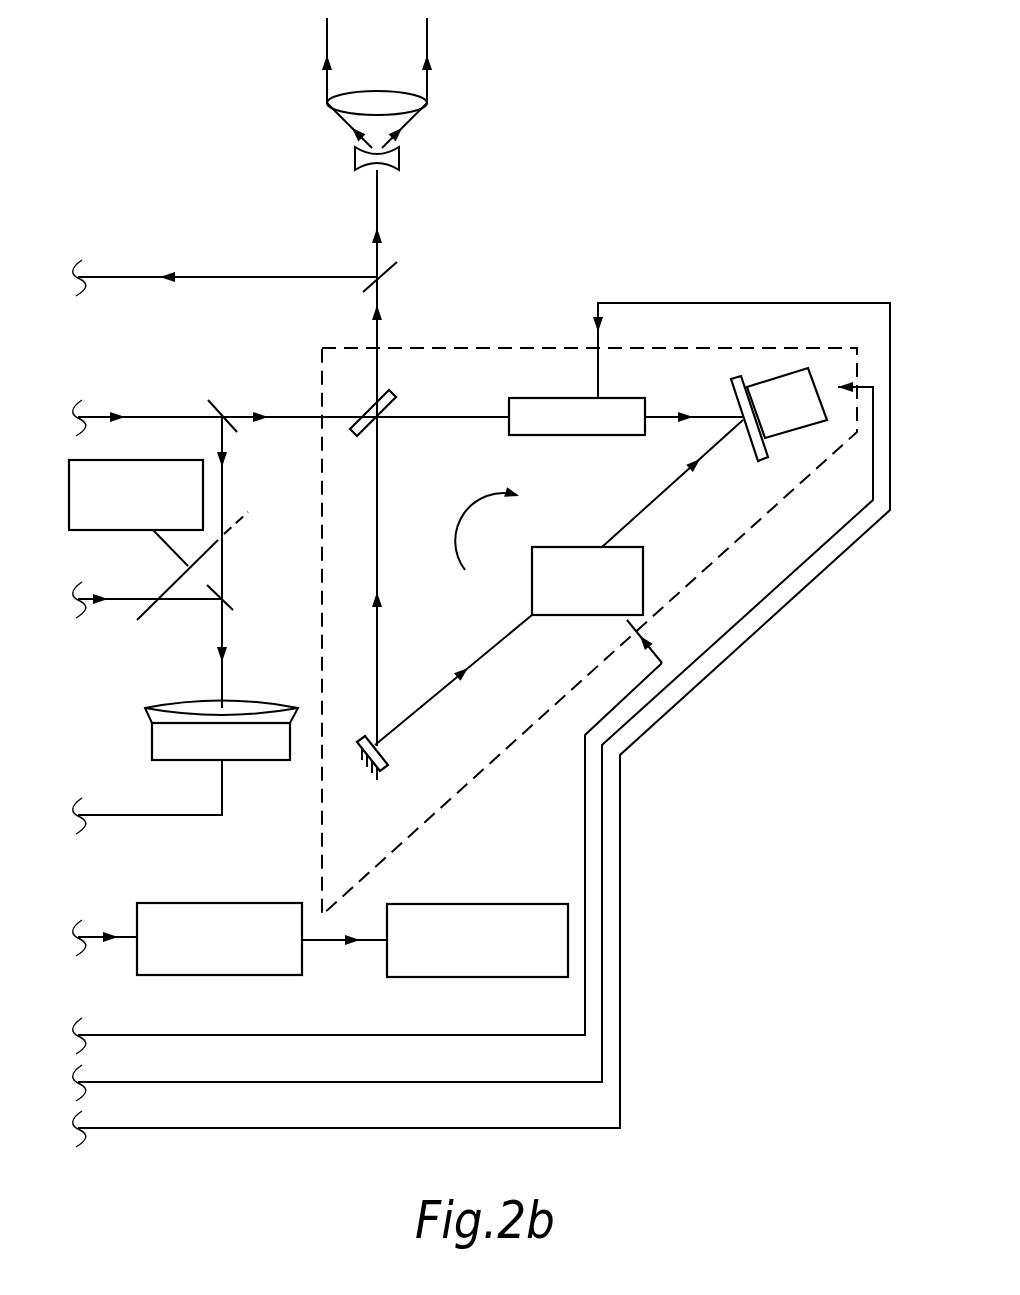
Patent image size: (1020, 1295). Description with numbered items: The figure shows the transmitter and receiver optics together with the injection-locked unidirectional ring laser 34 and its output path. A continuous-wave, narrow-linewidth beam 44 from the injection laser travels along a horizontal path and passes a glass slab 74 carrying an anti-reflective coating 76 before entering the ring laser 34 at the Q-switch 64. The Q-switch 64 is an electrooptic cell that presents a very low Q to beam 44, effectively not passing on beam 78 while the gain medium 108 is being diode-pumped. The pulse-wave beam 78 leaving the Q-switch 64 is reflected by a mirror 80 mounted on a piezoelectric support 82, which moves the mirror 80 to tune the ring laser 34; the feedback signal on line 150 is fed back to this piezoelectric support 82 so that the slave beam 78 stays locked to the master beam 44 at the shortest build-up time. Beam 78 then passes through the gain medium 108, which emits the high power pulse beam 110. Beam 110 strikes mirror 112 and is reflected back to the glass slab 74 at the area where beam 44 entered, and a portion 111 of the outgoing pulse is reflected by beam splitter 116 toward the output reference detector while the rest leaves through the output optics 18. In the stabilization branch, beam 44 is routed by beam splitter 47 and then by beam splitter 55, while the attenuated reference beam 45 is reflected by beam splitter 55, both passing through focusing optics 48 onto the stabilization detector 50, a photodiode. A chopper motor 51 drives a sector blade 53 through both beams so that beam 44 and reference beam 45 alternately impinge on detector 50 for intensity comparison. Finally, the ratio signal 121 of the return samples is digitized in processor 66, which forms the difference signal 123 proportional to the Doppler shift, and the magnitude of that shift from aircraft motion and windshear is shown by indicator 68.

The telescope optics 18 is at (327, 102).
The high power laser pulse beam 110 is at (375, 340).
The beam splitter 116 is at (392, 268).
The portion of outgoing pulse 111 is at (80, 278).
The beam 44 is at (308, 417).
The beam splitter 47 is at (222, 410).
The chopper motor 51 is at (157, 460).
The sector blade 53 is at (170, 578).
The reference beam 45 is at (222, 638).
The beam splitter 55 is at (237, 603).
The focusing optics 48 is at (167, 700).
The stabilization detector 50 is at (175, 762).
The unidirectional ring laser 34 is at (650, 303).
The Q-switch 64 is at (535, 398).
The pulse-wave beam 78 is at (710, 425).
The mirror 80 is at (757, 463).
The piezoelectric support 82 is at (765, 372).
The anti-reflective coating 76 is at (360, 426).
The glass slab 74 is at (375, 475).
The gain medium 108 is at (645, 585).
The mirror 112 is at (388, 762).
The line 150 is at (735, 627).
The processor 66 is at (185, 903).
The indicator 68 is at (478, 904).
The ratio signal 121 is at (95, 940).
The difference signal 123 is at (330, 941).